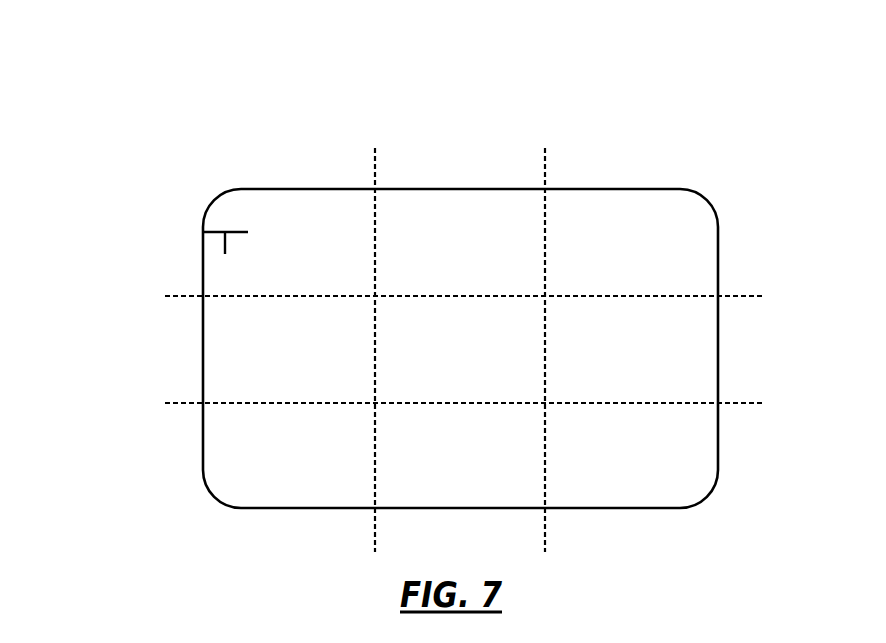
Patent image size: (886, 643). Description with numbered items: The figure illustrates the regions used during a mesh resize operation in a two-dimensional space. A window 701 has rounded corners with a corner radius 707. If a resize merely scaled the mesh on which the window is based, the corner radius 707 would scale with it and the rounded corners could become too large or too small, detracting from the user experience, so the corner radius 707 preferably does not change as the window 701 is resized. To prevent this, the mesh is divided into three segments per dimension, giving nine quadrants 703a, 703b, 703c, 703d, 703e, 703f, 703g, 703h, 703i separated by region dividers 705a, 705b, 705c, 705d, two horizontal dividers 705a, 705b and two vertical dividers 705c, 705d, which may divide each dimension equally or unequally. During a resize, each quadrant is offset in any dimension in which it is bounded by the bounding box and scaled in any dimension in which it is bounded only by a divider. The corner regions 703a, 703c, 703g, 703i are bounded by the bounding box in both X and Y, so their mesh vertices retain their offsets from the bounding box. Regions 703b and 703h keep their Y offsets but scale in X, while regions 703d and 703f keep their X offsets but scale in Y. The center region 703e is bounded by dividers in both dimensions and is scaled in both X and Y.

The window 701 is at (718, 340).
The quadrant 703a is at (322, 256).
The quadrant 703b is at (494, 256).
The quadrant 703c is at (663, 256).
The quadrant 703d is at (323, 362).
The quadrant 703e is at (493, 362).
The quadrant 703f is at (660, 362).
The quadrant 703g is at (323, 468).
The quadrant 703h is at (494, 468).
The quadrant 703i is at (658, 468).
The region divider 705a is at (170, 297).
The region divider 705b is at (170, 404).
The region divider 705c is at (375, 150).
The region divider 705d is at (545, 150).
The corner radius 707 is at (225, 254).